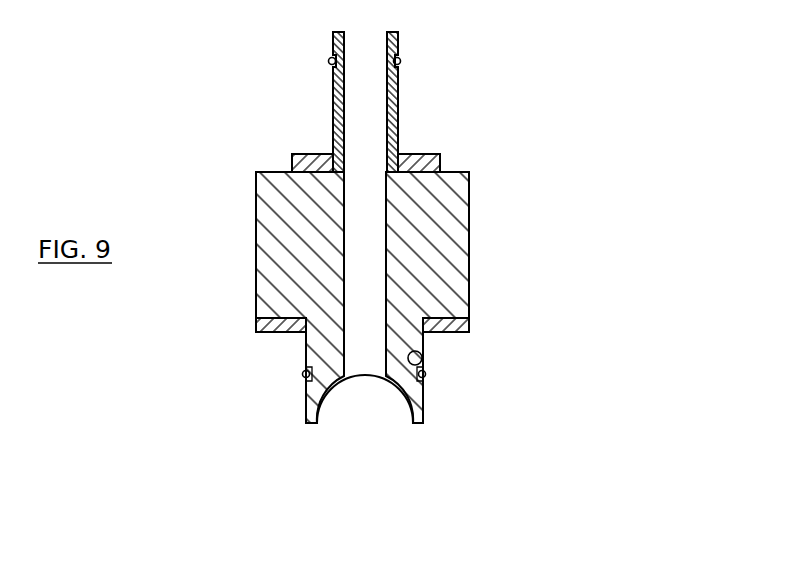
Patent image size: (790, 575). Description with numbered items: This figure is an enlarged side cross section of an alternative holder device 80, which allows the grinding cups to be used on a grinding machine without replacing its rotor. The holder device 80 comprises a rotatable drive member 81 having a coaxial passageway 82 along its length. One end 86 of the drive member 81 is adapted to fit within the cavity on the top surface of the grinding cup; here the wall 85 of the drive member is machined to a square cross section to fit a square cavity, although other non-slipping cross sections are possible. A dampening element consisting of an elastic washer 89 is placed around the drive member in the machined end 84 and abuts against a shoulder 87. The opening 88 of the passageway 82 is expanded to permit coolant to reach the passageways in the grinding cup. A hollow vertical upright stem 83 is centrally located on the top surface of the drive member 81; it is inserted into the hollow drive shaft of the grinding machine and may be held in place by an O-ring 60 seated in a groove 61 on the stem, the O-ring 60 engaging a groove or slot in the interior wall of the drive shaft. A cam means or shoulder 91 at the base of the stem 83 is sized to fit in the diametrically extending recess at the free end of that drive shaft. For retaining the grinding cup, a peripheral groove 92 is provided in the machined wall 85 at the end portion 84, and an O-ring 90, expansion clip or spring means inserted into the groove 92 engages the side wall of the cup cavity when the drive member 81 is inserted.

The O-ring 60 is at (329, 60).
The groove 61 is at (400, 60).
The holder device 80 is at (560, 210).
The rotatable drive member 81 is at (470, 247).
The coaxial passageway 82 is at (376, 90).
The hollow vertical upright stem 83 is at (333, 105).
The machined end 84 is at (555, 375).
The wall 85 is at (425, 413).
The end 86 is at (421, 425).
The shoulder 87 is at (294, 333).
The opening 88 is at (364, 393).
The elastic washer 89 is at (470, 325).
The O-ring 90 is at (303, 375).
The cam means or shoulder 91 is at (418, 154).
The peripheral groove 92 is at (426, 353).